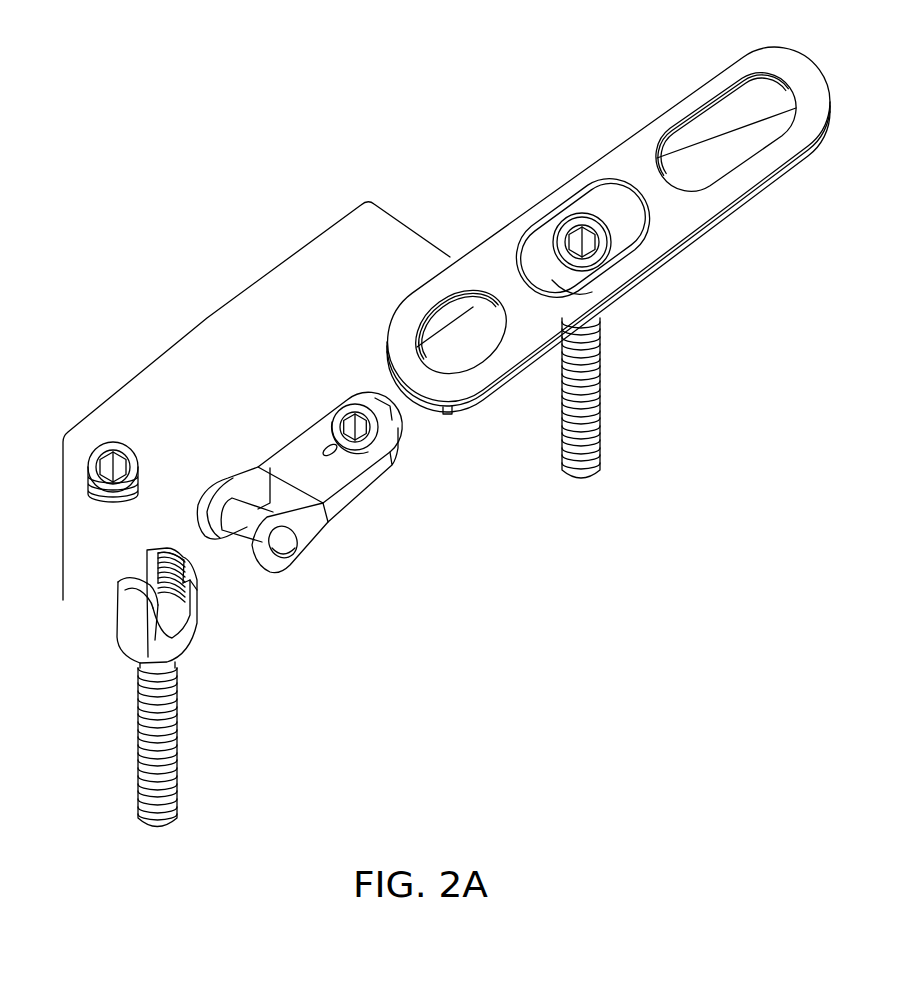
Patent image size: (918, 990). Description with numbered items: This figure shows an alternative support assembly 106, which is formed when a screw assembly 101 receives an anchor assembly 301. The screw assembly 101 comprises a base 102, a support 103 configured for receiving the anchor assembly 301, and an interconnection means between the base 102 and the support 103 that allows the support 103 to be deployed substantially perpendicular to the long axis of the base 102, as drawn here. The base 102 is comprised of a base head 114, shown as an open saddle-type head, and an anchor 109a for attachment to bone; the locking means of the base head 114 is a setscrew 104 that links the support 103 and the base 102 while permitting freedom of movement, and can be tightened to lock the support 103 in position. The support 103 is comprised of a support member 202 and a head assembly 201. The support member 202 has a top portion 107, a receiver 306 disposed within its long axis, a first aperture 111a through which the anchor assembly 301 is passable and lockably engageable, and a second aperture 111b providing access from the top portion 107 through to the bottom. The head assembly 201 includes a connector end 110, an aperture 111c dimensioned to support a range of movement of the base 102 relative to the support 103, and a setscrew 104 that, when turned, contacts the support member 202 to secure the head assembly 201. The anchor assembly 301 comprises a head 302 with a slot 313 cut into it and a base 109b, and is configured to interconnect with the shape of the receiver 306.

The screw assembly 101 is at (205, 318).
The base 102 is at (124, 665).
The support 103 is at (453, 427).
The setscrew 104 is at (115, 447).
The support assembly 106 is at (345, 145).
The top portion 107 is at (480, 258).
The anchor 109a is at (175, 760).
The base 109b is at (603, 414).
The connector end 110 is at (243, 556).
The first aperture 111a is at (757, 115).
The second aperture 111b is at (452, 347).
The aperture 111c is at (270, 500).
The base head 114 is at (127, 626).
The head assembly 201 is at (347, 504).
The support member 202 is at (490, 417).
The anchor assembly 301 is at (610, 366).
The head 302 is at (582, 296).
The receiver 306 is at (703, 102).
The slot 313 is at (690, 232).